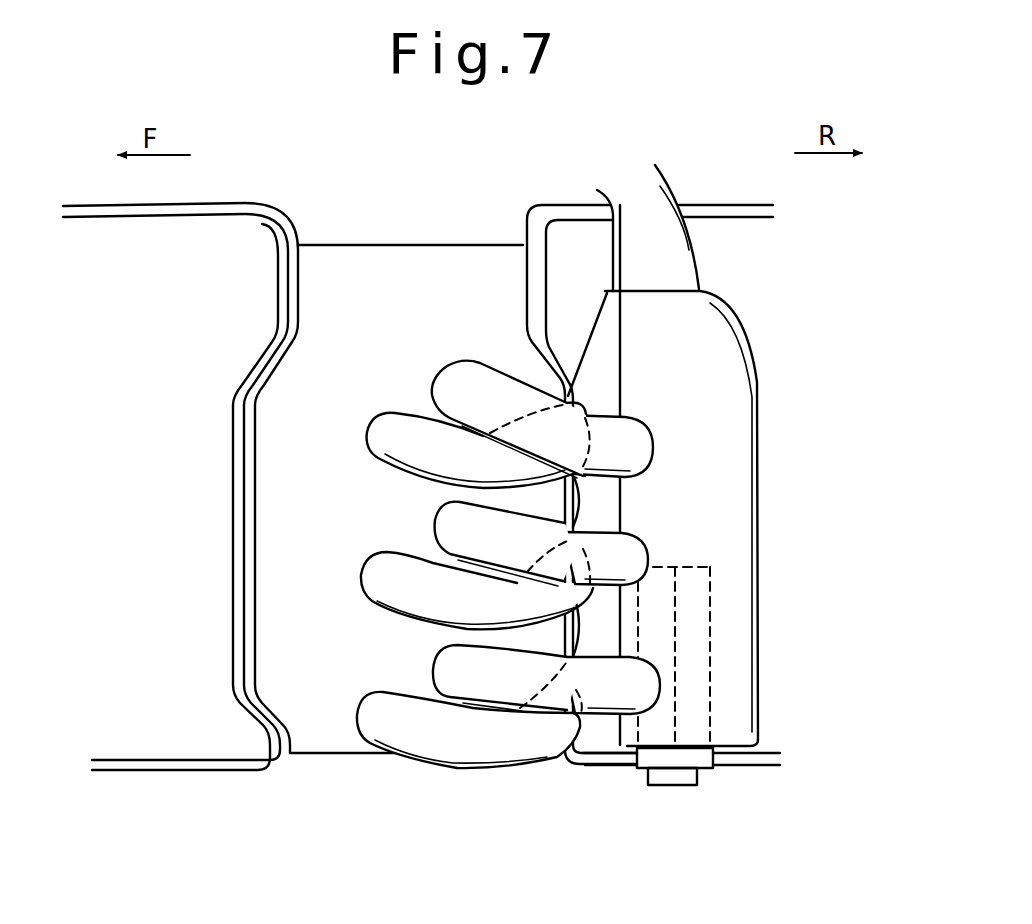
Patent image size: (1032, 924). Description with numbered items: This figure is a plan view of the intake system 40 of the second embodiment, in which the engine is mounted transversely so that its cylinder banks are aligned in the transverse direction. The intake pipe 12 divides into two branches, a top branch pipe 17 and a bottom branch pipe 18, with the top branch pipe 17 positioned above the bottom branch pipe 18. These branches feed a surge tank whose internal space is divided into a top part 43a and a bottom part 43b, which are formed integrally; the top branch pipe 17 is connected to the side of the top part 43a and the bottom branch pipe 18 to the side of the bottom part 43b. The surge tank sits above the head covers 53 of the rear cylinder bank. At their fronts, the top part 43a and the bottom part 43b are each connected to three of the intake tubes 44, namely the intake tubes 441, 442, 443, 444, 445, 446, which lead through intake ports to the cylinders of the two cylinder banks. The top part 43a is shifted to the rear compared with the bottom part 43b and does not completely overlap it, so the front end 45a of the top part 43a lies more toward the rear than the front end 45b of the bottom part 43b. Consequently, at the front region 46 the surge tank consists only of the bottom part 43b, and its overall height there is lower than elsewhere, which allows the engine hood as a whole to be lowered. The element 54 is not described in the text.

The intake pipe 12 is at (636, 186).
The top branch pipe 17 is at (685, 255).
The bottom branch pipe 18 is at (617, 257).
The intake system 40 is at (776, 578).
The top part 43a is at (742, 450).
The bottom part 43b is at (605, 340).
The intake tubes 44 is at (538, 777).
The intake tube 441 is at (453, 668).
The intake tube 442 is at (440, 748).
The intake tube 443 is at (452, 527).
The intake tube 444 is at (362, 576).
The intake tube 445 is at (465, 382).
The intake tube 446 is at (372, 434).
The front end 45a is at (612, 368).
The front end 45b is at (567, 503).
The front region 46 is at (604, 734).
The head cover 53 is at (772, 722).
The bracket 54 is at (160, 737).